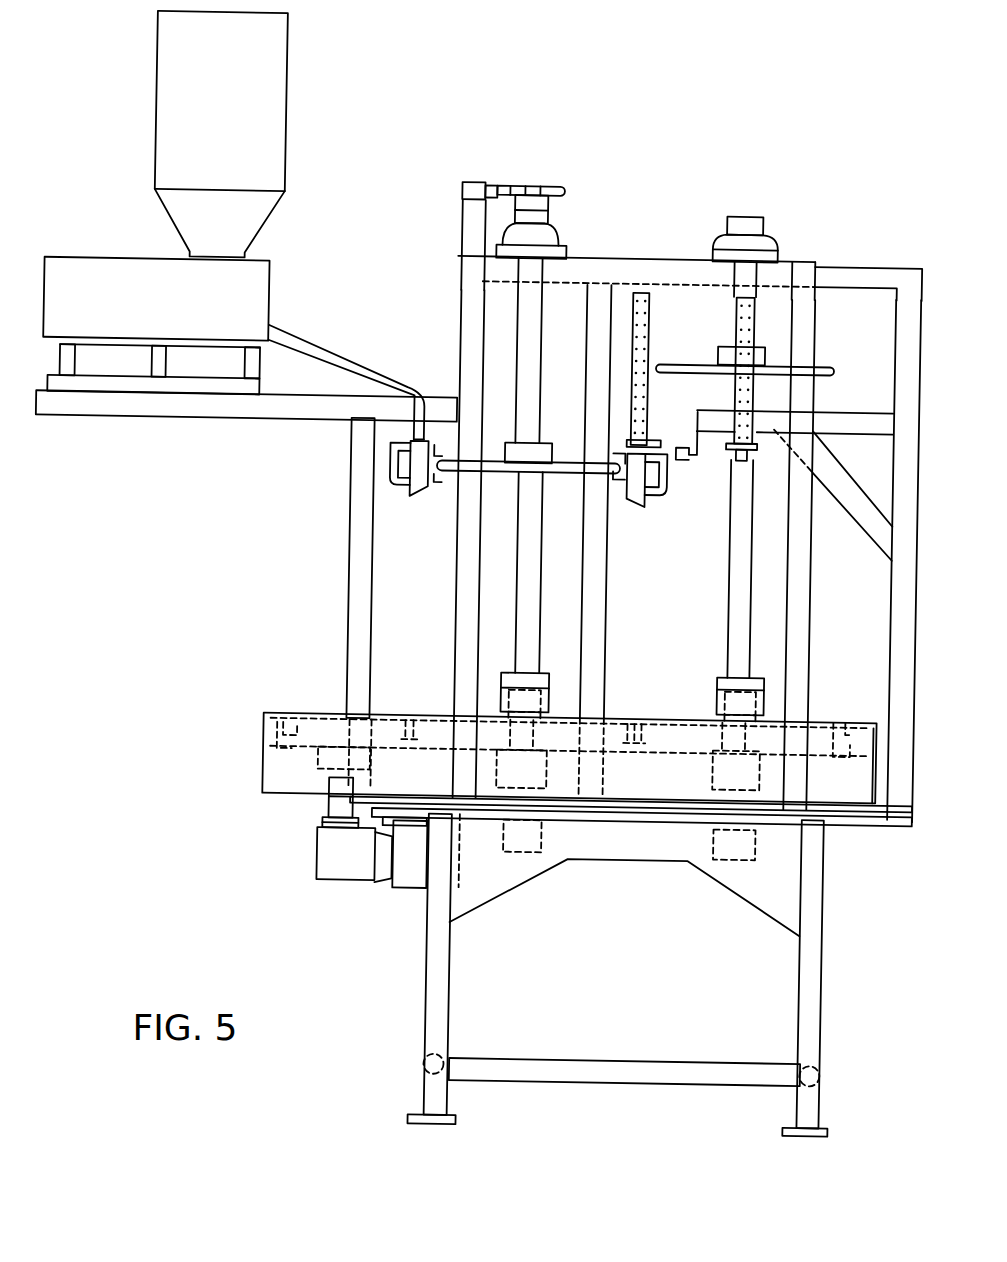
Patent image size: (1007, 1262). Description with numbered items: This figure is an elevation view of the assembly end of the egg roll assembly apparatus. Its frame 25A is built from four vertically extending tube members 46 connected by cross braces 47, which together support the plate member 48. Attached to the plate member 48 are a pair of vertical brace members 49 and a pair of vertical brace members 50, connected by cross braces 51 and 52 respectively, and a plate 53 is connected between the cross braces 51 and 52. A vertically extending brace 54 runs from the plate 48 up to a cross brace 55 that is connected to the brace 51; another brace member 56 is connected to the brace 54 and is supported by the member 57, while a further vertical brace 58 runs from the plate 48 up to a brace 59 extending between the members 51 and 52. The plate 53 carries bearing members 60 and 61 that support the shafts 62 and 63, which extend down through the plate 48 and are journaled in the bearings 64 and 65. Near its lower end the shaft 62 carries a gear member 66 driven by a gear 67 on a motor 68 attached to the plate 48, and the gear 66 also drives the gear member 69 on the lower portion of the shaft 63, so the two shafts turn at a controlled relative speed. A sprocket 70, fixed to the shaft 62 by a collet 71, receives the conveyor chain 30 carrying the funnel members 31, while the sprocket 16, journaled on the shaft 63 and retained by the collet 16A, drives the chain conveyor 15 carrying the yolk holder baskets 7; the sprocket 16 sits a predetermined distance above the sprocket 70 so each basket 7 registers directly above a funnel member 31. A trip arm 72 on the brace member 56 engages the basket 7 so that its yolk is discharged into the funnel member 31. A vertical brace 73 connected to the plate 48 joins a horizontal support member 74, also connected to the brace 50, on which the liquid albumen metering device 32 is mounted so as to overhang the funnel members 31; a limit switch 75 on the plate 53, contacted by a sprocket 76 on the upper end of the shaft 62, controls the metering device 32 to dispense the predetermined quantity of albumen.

The yolk holder basket 7 is at (720, 397).
The chain conveyor 15 is at (661, 359).
The sprocket 16 is at (826, 366).
The collet 16A is at (725, 348).
The frame 25A is at (833, 922).
The conveyor chain 30 is at (434, 478).
The funnel member 31 is at (405, 504).
The liquid albumen metering device 32 is at (258, 291).
The vertically extending tube member 46 is at (428, 1028).
The cross brace 47 is at (619, 1068).
The plate member 48 is at (893, 822).
The vertical brace member 49 is at (802, 612).
The vertical brace member 50 is at (465, 621).
The cross brace 51 is at (806, 280).
The cross brace 52 is at (471, 268).
The plate 53 is at (660, 261).
The vertically extending brace 54 is at (895, 646).
The cross brace 55 is at (878, 282).
The brace member 56 is at (843, 422).
The support member 57 is at (862, 512).
The vertical brace 58 is at (600, 630).
The brace 59 is at (562, 278).
The bearing member 60 is at (553, 239).
The bearing member 61 is at (770, 244).
The shaft 62 is at (531, 553).
The shaft 63 is at (738, 554).
The bearing 64 is at (548, 828).
The bearing 65 is at (712, 828).
The gear member 66 is at (430, 716).
The gear 67 is at (300, 728).
The motor 68 is at (343, 870).
The gear member 69 is at (832, 735).
The sprocket 70 is at (563, 477).
The collet 71 is at (550, 441).
The trip arm 72 is at (697, 467).
The vertical brace 73 is at (352, 596).
The horizontal support member 74 is at (208, 410).
The limit switch 75 is at (466, 183).
The sprocket 76 is at (555, 186).